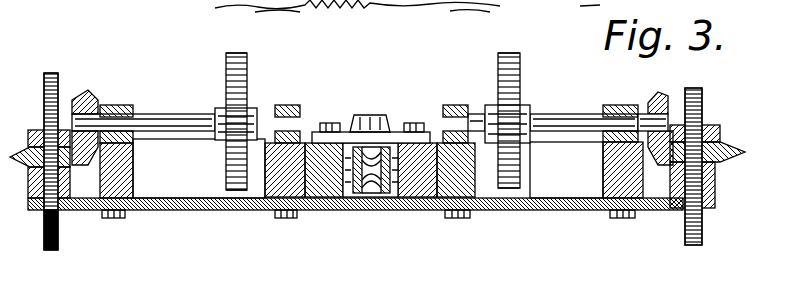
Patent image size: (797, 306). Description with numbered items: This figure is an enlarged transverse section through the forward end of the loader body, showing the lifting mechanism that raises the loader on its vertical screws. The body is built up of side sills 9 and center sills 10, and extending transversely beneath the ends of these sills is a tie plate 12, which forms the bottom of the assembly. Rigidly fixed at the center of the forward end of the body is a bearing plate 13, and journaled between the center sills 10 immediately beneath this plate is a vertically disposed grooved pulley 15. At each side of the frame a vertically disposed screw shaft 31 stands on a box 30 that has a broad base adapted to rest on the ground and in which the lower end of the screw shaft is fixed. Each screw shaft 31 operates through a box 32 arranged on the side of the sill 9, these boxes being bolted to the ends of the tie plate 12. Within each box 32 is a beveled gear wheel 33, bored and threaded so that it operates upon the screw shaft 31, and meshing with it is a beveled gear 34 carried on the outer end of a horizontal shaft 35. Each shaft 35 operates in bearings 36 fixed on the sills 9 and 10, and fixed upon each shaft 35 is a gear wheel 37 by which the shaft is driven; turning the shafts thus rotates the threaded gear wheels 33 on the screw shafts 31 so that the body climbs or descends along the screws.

The side sills 9 is at (135, 171).
The center sills 10 is at (263, 207).
The tie plates 12 is at (212, 209).
The bearing plate 13 is at (345, 135).
The grooved pulley 15 is at (372, 185).
The boxes 30 is at (340, 6).
The screw shafts 31 is at (52, 74).
The boxes 32 is at (35, 129).
The beveled gear wheels 33 is at (82, 168).
The beveled gears 34 is at (82, 99).
The shafts 35 is at (169, 122).
The bearings 36 is at (124, 106).
The gear wheel 37 is at (238, 54).